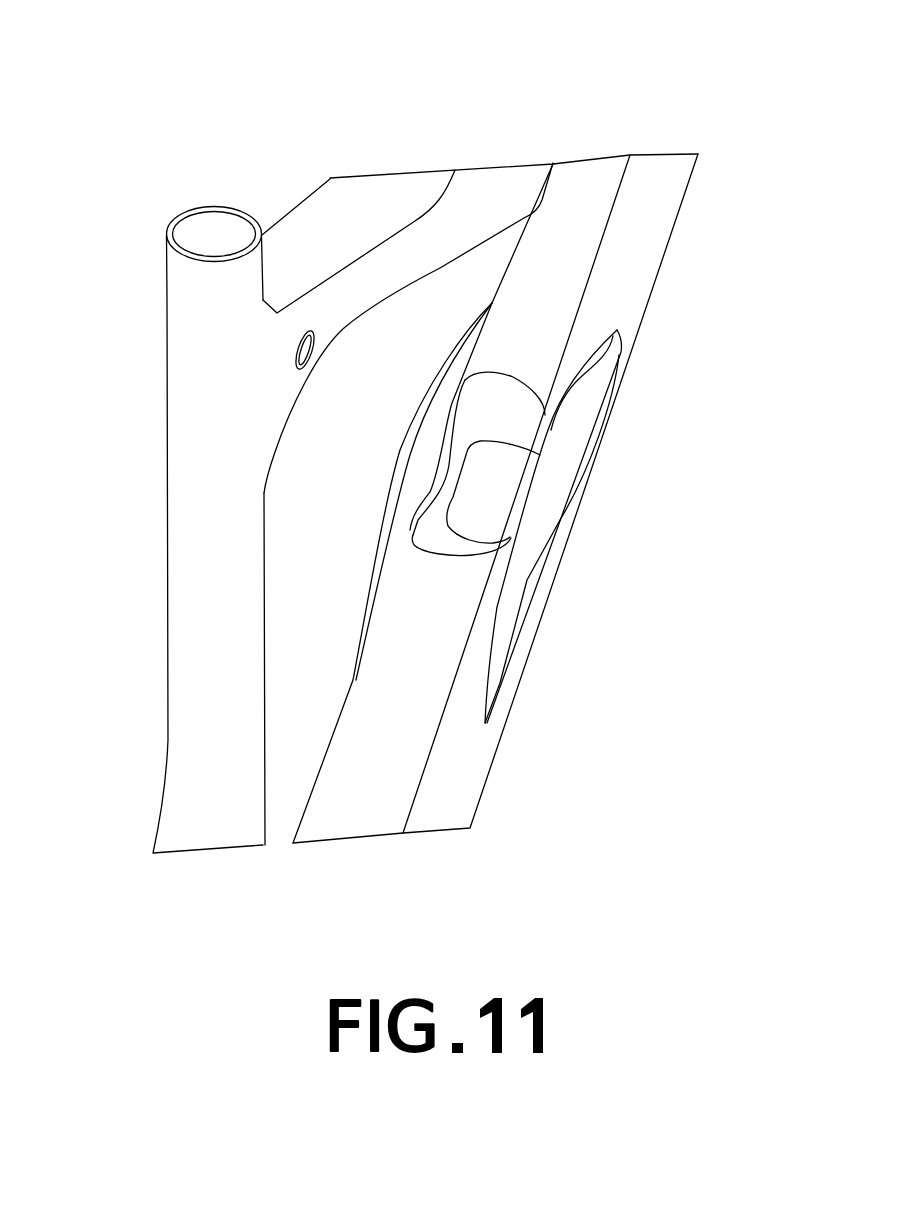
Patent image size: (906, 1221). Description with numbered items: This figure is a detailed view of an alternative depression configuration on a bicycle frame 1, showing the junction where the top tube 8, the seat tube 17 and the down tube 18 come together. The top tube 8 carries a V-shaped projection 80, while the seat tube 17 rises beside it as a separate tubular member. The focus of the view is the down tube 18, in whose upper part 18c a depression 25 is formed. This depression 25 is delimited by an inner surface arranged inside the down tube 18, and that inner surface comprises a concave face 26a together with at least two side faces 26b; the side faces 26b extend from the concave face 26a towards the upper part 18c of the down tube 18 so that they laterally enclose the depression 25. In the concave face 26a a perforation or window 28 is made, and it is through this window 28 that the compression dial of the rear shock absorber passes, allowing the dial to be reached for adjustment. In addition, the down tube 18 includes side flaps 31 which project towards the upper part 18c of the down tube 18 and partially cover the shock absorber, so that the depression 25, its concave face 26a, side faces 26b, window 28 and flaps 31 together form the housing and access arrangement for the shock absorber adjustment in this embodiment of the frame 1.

The frame 1 is at (193, 67).
The top tube 8 is at (345, 220).
The seat tube 17 is at (213, 662).
The down tube 18 is at (455, 790).
The upper part of the down tube 18c is at (558, 242).
The depression 25 is at (532, 416).
The concave face 26a is at (510, 400).
The side faces 26b is at (449, 435).
The perforation or window 28 is at (478, 513).
The side flaps 31 is at (423, 447).
The V-shaped projection 80 is at (532, 198).